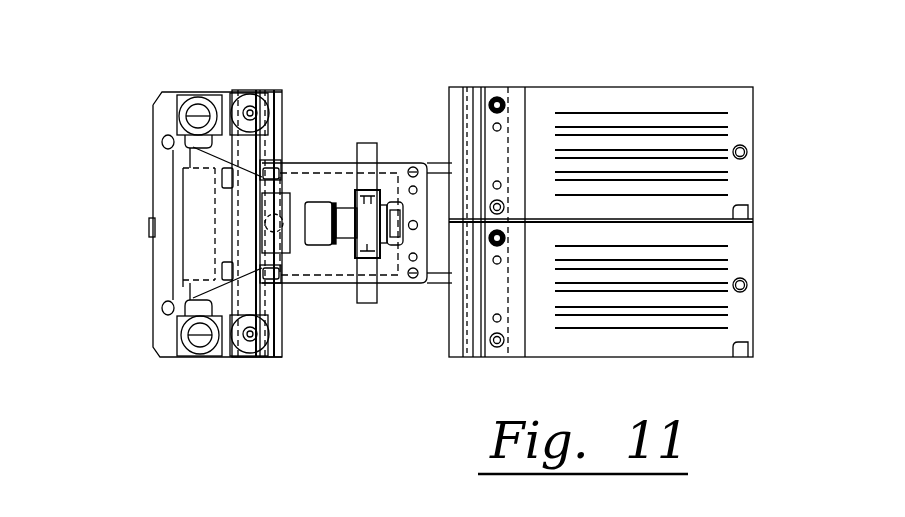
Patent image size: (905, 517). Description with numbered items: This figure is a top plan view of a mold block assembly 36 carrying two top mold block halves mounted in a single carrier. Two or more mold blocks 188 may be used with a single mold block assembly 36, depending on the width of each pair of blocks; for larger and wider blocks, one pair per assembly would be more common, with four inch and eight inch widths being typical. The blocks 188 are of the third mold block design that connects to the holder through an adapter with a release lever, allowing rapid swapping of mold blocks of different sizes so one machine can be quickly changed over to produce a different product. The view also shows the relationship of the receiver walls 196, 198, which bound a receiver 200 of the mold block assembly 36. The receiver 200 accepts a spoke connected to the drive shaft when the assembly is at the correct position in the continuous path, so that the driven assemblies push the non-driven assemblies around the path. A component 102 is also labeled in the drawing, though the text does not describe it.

The mold block assembly 36 is at (453, 184).
The actuator / cylinder 102 is at (318, 206).
The mold block 188 is at (752, 124).
The receiver wall 196 is at (190, 288).
The receiver wall 198 is at (185, 157).
The receiver 200 is at (217, 197).